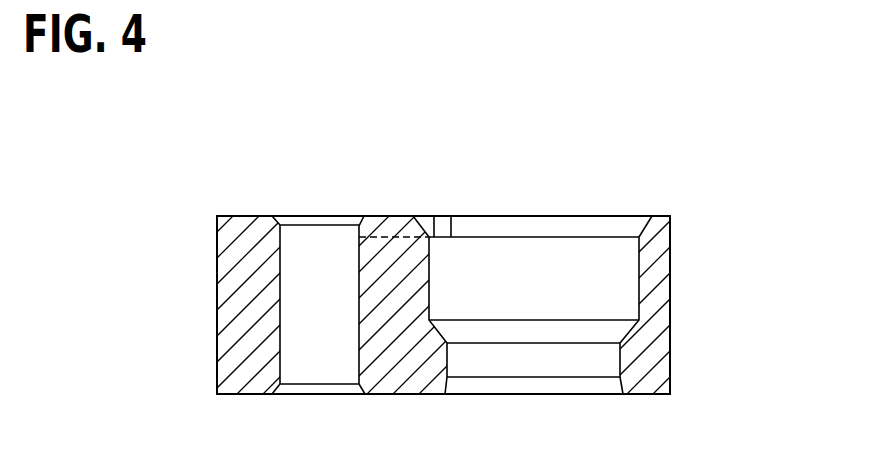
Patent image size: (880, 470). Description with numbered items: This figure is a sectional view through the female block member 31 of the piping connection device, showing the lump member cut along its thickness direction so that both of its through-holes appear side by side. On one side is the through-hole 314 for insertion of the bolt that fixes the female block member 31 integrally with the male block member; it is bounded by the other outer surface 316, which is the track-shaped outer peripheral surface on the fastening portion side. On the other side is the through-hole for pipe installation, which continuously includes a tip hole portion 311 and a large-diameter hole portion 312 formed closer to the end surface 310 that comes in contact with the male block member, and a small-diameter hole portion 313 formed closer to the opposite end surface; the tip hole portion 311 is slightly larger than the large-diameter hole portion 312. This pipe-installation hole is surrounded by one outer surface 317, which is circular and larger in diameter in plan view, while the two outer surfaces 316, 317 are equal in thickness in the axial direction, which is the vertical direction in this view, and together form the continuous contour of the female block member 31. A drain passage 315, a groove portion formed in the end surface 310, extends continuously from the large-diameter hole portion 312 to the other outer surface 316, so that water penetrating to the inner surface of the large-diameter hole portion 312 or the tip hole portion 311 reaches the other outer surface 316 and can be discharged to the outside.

The female block member 31 is at (208, 293).
The end surface 310 is at (374, 216).
The tip hole portion 311 is at (430, 229).
The large-diameter hole portion 312 is at (639, 278).
The small-diameter hole portion 313 is at (615, 362).
The through-hole for bolt insertion 314 is at (288, 265).
The drain passage 315 is at (397, 236).
The other outer surface 316 is at (217, 348).
The one outer surface 317 is at (671, 301).